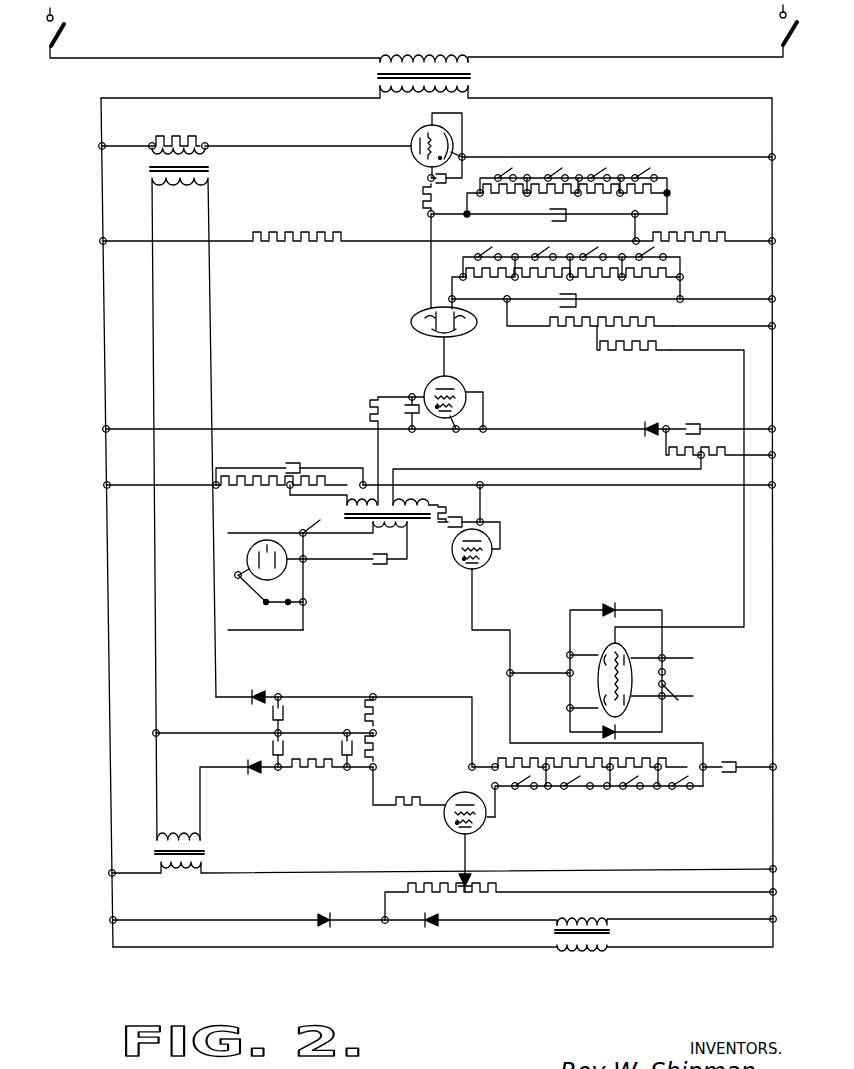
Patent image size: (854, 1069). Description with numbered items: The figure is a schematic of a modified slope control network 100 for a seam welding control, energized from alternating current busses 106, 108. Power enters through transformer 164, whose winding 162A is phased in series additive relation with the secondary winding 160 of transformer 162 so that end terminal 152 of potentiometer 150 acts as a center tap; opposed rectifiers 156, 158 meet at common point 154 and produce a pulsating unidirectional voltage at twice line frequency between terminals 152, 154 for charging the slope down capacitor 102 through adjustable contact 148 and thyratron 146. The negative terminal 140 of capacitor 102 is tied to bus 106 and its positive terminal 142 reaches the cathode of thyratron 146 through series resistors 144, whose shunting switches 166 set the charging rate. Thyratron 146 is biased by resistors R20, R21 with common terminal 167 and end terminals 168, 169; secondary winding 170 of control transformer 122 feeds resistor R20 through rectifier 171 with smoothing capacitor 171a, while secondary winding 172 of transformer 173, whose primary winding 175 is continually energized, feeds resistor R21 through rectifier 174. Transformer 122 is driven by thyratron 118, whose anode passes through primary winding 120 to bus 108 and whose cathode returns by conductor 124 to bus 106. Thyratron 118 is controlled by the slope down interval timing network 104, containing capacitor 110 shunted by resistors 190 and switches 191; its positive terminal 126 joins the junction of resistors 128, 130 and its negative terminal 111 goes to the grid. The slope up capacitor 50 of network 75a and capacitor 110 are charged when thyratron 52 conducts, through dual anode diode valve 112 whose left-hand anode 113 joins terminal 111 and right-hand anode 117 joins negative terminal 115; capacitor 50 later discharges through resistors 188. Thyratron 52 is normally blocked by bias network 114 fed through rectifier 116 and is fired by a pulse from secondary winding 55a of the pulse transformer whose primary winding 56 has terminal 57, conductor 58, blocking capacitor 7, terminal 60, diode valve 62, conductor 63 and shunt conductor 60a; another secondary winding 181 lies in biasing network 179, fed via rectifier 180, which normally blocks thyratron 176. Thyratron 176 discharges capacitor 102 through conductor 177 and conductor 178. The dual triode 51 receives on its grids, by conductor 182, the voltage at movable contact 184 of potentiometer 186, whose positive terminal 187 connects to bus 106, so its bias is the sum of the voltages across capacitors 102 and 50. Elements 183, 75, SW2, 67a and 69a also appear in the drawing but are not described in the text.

The network 100 is at (538, 44).
The transformer 164 is at (471, 77).
The winding 162A is at (410, 96).
The primary winding 120 is at (206, 143).
The control transformer 122 is at (206, 169).
The secondary winding 170 is at (175, 188).
The resistor 130 is at (313, 213).
The thyratron 118 is at (412, 158).
The resistor shunting switches 191 is at (648, 176).
The conductor 124 is at (664, 157).
The slope down interval timing network 104 is at (683, 186).
The positive terminal 126 is at (669, 194).
The negative terminal 111 is at (468, 215).
The series connected resistors 190 is at (618, 195).
The capacitor 110 is at (553, 219).
The resistor 128 is at (700, 239).
The tap switch contacts 183 is at (549, 256).
The network 75a is at (694, 264).
The alternating current bus 106 is at (771, 268).
The discharge resistors 188 is at (640, 280).
The negative terminal 115 is at (448, 297).
The left-hand anode 113 is at (410, 320).
The dual anode discharge device 112 is at (413, 331).
The right-hand anode 117 is at (472, 329).
The slope up capacitor 50 is at (573, 302).
The potentiometer 186 is at (618, 328).
The positive terminal 187 is at (770, 326).
The movable contact 184 is at (595, 343).
The thyratron 52 is at (450, 378).
The rectifier 180 is at (657, 416).
The biasing network 179 is at (724, 414).
The alternating current bus 108 is at (102, 356).
The rectifier 116 is at (366, 482).
The secondary winding 181 is at (400, 469).
The bias voltage establishing network 114 is at (269, 500).
The secondary winding 55a is at (304, 501).
The conductor 58 is at (302, 532).
The terminal 57 is at (366, 516).
The conductor 178 is at (483, 503).
The conductor 182 is at (742, 510).
The primary winding 56 is at (372, 532).
The resistor 75 is at (440, 524).
The diode rectifier valve 62 is at (289, 551).
The conductor 63 is at (236, 575).
The terminal 60 is at (307, 562).
The direct current blocking capacitor 7 is at (377, 566).
The thyratron 176 is at (460, 569).
The switch SW2 is at (283, 604).
The conductor 60a is at (280, 632).
The rectifier 171 is at (263, 686).
The conductor 177 is at (510, 632).
The end terminal 168 is at (374, 694).
The resistor R20 is at (383, 710).
The common terminal 167 is at (377, 733).
The resistor R21 is at (383, 750).
The end terminal 169 is at (378, 767).
The smoothing capacitor 171a is at (272, 718).
The rectifier 174 is at (254, 776).
The secondary winding 172 is at (186, 836).
The transformer 173 is at (208, 852).
The primary winding 175 is at (180, 870).
The thyratron 146 is at (445, 823).
The dual triode vacuum discharge device 51 is at (600, 686).
The contact 67a is at (665, 657).
The contact 69a is at (665, 698).
The slope down capacitor 102 is at (738, 758).
The series connected resistors 144 is at (658, 765).
The negative terminal 140 is at (763, 768).
The positive terminal 142 is at (704, 770).
The shunting switches 166 is at (638, 790).
The adjustable contact 148 is at (472, 876).
The potentiometer 150 is at (524, 888).
The end terminal 152 is at (771, 889).
The secondary winding 160 is at (575, 917).
The transformer 162 is at (612, 931).
The rectifier 158 is at (322, 921).
The common point 154 is at (385, 922).
The rectifier 156 is at (432, 922).